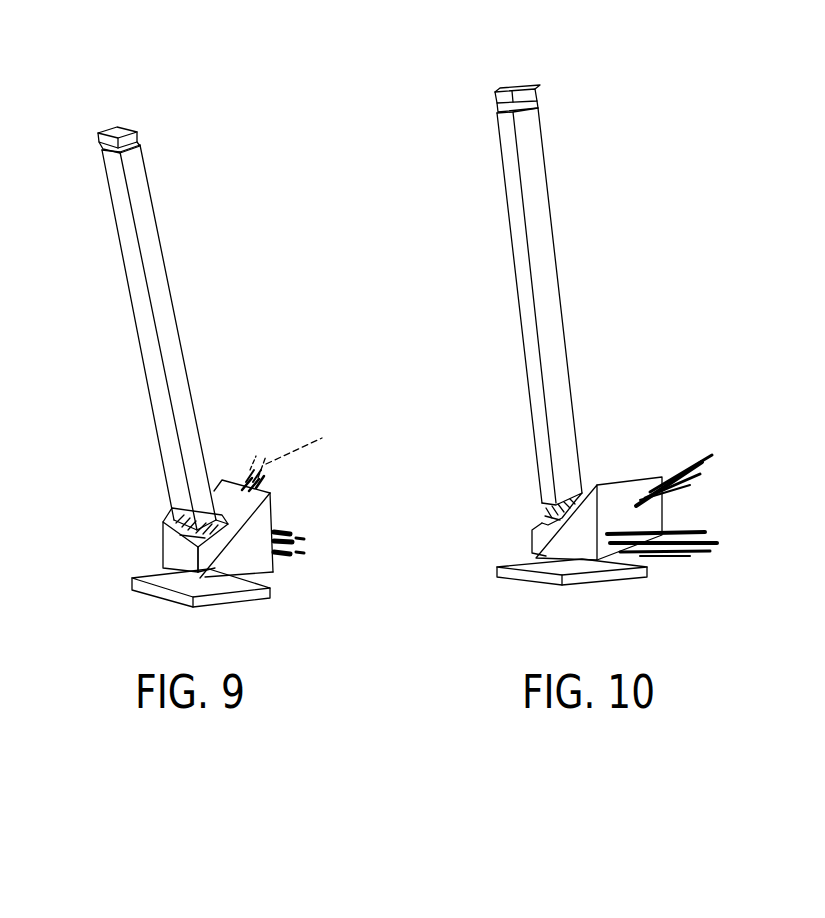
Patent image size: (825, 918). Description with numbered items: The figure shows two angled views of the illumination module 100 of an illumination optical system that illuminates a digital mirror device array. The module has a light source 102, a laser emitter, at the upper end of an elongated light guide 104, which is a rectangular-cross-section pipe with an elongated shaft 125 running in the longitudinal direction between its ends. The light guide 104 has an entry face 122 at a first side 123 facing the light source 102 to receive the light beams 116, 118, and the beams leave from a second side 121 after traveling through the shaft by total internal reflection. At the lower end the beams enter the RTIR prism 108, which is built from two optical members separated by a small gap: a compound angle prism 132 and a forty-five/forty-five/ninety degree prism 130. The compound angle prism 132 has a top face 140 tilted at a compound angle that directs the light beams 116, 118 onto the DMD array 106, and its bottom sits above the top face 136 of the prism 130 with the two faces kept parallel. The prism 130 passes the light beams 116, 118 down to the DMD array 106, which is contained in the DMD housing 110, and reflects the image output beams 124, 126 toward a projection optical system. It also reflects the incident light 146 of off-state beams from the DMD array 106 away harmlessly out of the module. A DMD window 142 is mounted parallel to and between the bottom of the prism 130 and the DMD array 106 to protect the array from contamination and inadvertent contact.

In FIG. 9, the illumination module 100 is at (196, 175).
In FIG. 10, the illumination module 100 is at (656, 165).
In FIG. 9, the light source 102 is at (118, 126).
In FIG. 10, the light source 102 is at (508, 92).
In FIG. 9, the light guide 104 is at (138, 252).
In FIG. 10, the light guide 104 is at (535, 158).
In FIG. 9, the DMD array 106 is at (135, 582).
In FIG. 10, the DMD array 106 is at (513, 560).
In FIG. 9, the RTIR prism 108 is at (262, 443).
In FIG. 10, the RTIR prism 108 is at (611, 453).
In FIG. 9, the DMD housing 110 is at (240, 600).
In FIG. 10, the DMD housing 110 is at (600, 577).
In FIG. 9, the light beam 116 is at (173, 519).
In FIG. 10, the light beam 116 is at (543, 515).
In FIG. 9, the light beam 118 is at (203, 560).
In FIG. 10, the light beam 118 is at (542, 502).
In FIG. 9, the second side 121 is at (170, 452).
In FIG. 9, the entry face 122 is at (98, 135).
In FIG. 9, the first side 123 is at (110, 162).
In FIG. 10, the image output beam 124 is at (675, 560).
In FIG. 9, the elongated shaft 125 is at (153, 277).
In FIG. 10, the elongated shaft 125 is at (550, 240).
In FIG. 10, the image output beam 126 is at (688, 533).
In FIG. 9, the 45-45-90 degree prism 130 is at (270, 507).
In FIG. 10, the 45-45-90 degree prism 130 is at (652, 513).
In FIG. 9, the compound angle prism 132 is at (168, 522).
In FIG. 10, the compound angle prism 132 is at (533, 548).
In FIG. 9, the top face 136 is at (214, 491).
In FIG. 9, the top face 140 is at (193, 542).
In FIG. 9, the DMD window 142 is at (165, 580).
In FIG. 9, the incident light of off state beams 146 is at (264, 463).
In FIG. 10, the incident light of off state beams 146 is at (688, 462).